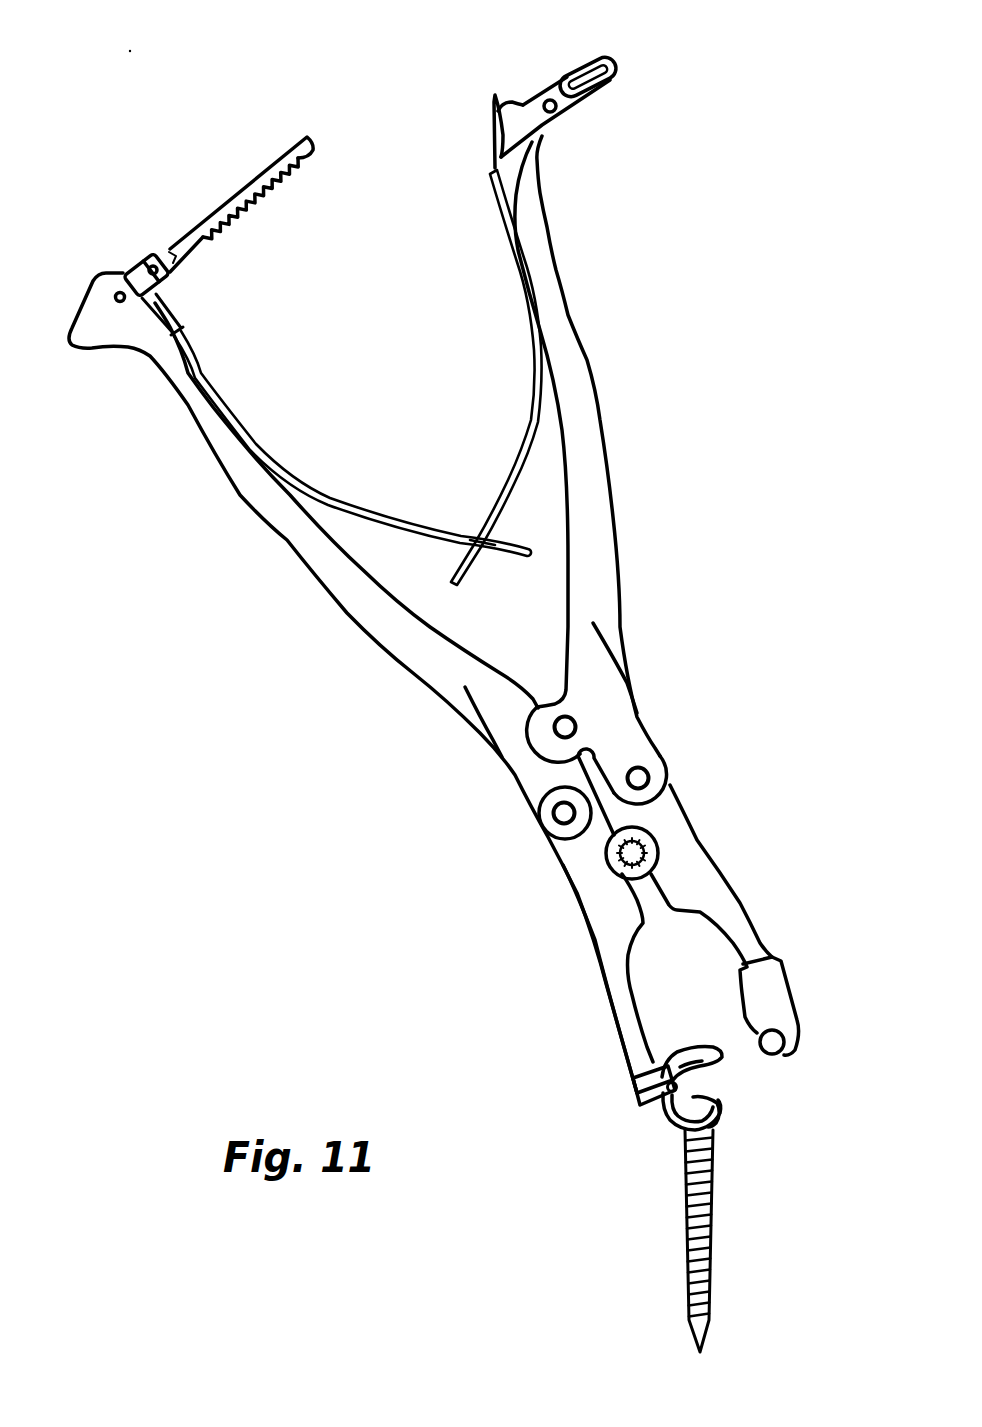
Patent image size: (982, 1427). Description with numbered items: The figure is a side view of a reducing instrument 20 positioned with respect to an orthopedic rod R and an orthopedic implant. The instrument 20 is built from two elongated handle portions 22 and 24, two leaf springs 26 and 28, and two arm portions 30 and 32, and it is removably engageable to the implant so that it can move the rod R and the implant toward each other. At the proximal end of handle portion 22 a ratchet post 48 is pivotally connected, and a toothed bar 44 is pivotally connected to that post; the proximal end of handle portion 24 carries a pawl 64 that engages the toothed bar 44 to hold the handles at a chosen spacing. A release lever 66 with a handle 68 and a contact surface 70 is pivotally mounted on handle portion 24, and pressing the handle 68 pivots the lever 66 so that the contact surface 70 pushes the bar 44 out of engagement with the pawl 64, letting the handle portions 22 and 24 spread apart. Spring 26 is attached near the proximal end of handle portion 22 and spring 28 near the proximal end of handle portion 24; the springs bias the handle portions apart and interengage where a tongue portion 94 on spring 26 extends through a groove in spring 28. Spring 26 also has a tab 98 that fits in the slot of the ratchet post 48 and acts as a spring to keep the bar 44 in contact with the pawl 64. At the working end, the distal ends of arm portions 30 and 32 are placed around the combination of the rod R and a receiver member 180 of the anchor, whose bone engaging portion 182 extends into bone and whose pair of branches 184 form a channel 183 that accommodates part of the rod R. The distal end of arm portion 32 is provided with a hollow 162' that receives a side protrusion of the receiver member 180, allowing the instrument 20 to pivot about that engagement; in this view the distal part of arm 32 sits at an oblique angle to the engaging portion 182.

The reducing instrument 20 is at (722, 292).
The handle portion 22 is at (237, 512).
The handle portion 24 is at (596, 343).
The spring 26 is at (273, 453).
The spring 28 is at (523, 408).
The arm portion 30 is at (745, 900).
The arm portion 32 is at (587, 952).
The toothed bar 44 is at (228, 198).
The ratchet post 48 is at (138, 257).
The pawl 64 is at (492, 110).
The release lever 66 is at (559, 85).
The handle 68 is at (608, 78).
The contact surface 70 is at (509, 118).
The tongue portion 94 is at (487, 557).
The tab 98 is at (163, 298).
The hollow 162' is at (610, 1096).
The receiver member 180 is at (668, 1111).
The bone engaging portion 182 is at (683, 1250).
The channel 183 is at (690, 1093).
The branches 184 is at (708, 1047).
The rod R is at (777, 1052).